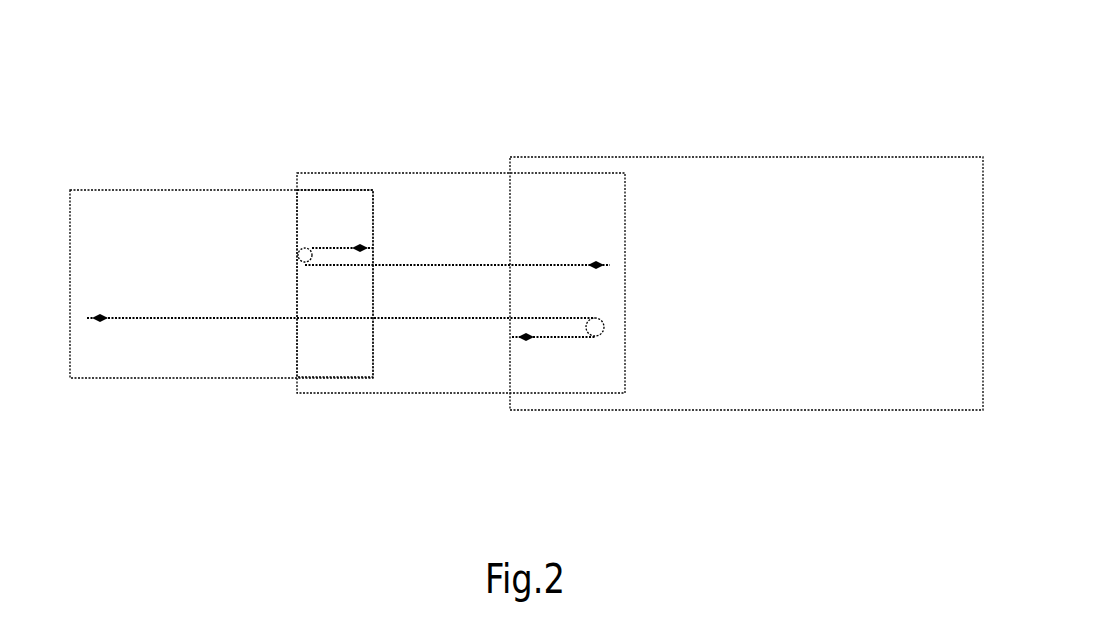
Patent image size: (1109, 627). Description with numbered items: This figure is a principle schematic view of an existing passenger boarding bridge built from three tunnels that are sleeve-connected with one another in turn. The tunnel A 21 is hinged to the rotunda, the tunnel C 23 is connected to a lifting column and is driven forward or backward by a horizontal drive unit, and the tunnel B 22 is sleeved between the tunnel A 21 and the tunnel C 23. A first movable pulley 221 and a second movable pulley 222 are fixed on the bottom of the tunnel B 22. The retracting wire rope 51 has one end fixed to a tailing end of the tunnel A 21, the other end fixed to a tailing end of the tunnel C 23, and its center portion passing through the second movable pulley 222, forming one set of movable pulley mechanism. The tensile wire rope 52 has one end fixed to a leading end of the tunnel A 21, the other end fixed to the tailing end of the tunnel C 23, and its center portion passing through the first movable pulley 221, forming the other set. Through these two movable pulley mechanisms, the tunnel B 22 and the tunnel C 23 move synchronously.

The tunnel A 21 is at (221, 195).
The tunnel B 22 is at (461, 203).
The tunnel C 23 is at (746, 211).
The first movable pulley 221 is at (370, 195).
The second movable pulley 222 is at (702, 174).
The retracting wire rope 51 is at (341, 405).
The tensile wire rope 52 is at (457, 370).